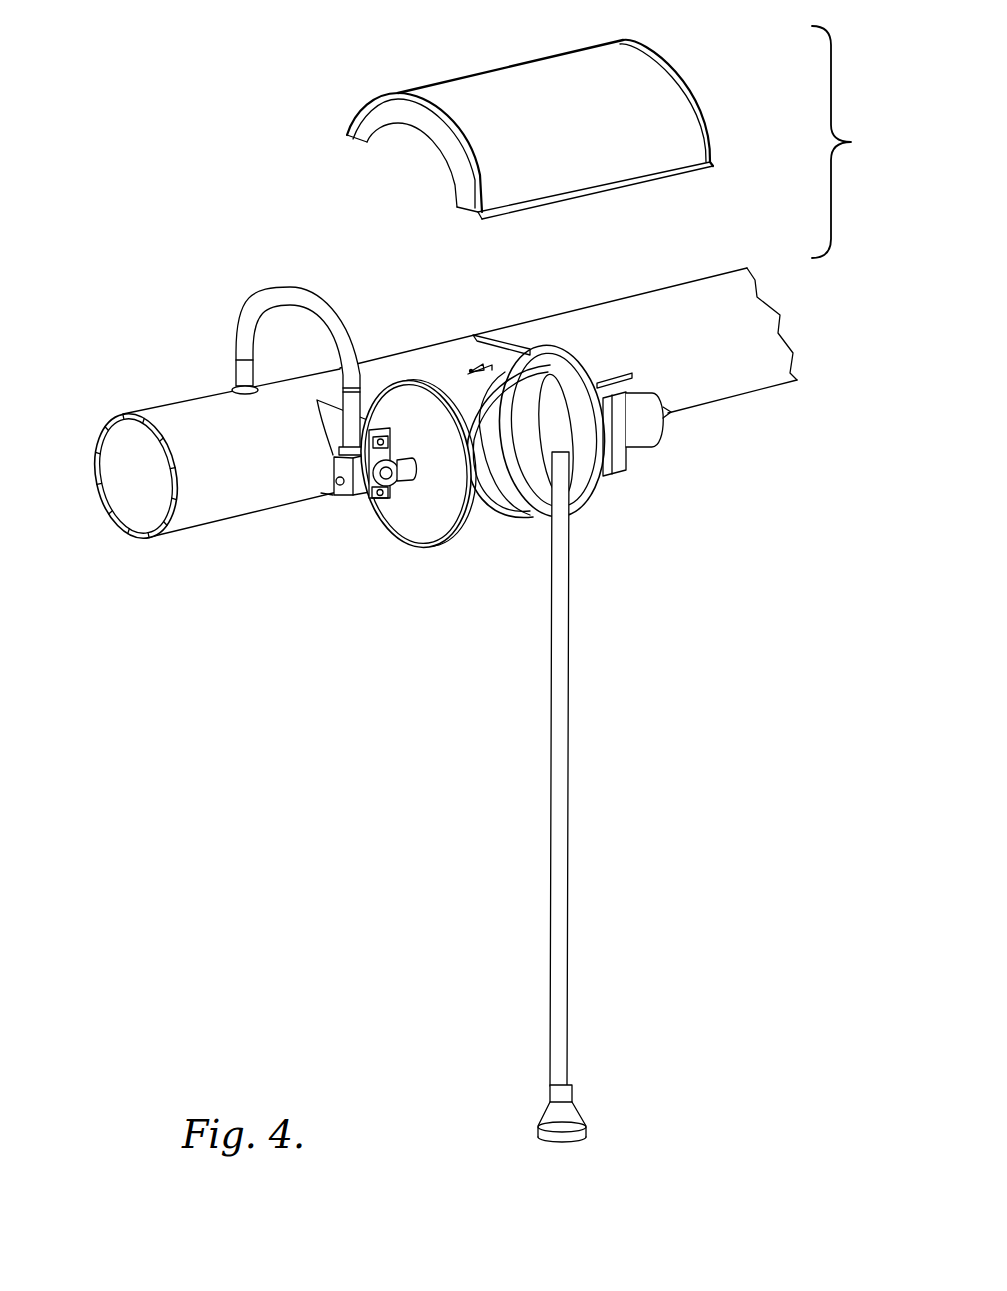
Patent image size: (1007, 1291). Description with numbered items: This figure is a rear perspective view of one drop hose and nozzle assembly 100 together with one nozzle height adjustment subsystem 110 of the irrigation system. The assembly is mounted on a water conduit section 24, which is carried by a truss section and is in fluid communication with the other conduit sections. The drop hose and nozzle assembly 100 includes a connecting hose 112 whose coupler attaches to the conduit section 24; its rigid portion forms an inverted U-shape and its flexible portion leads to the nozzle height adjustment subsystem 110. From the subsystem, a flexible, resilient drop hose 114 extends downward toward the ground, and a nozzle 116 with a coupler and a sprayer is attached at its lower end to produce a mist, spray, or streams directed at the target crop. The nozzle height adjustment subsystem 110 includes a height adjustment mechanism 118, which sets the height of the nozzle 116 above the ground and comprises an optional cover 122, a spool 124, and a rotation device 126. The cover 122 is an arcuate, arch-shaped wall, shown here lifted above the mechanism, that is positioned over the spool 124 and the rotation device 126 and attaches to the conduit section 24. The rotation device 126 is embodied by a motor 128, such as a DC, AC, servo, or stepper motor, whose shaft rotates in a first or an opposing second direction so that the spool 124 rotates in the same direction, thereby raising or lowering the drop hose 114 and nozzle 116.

The drop hose and nozzle assembly 100 is at (195, 142).
The nozzle height adjustment subsystem 110 is at (467, 572).
The connecting hose 112 is at (237, 303).
The drop hose 114 is at (557, 818).
The nozzle 116 is at (548, 1115).
The height adjustment mechanism 118 is at (587, 520).
The cover 122 is at (500, 84).
The spool 124 is at (375, 538).
The rotation device 126 is at (647, 457).
The motor 128 is at (634, 424).
The conduit section 24 is at (190, 510).